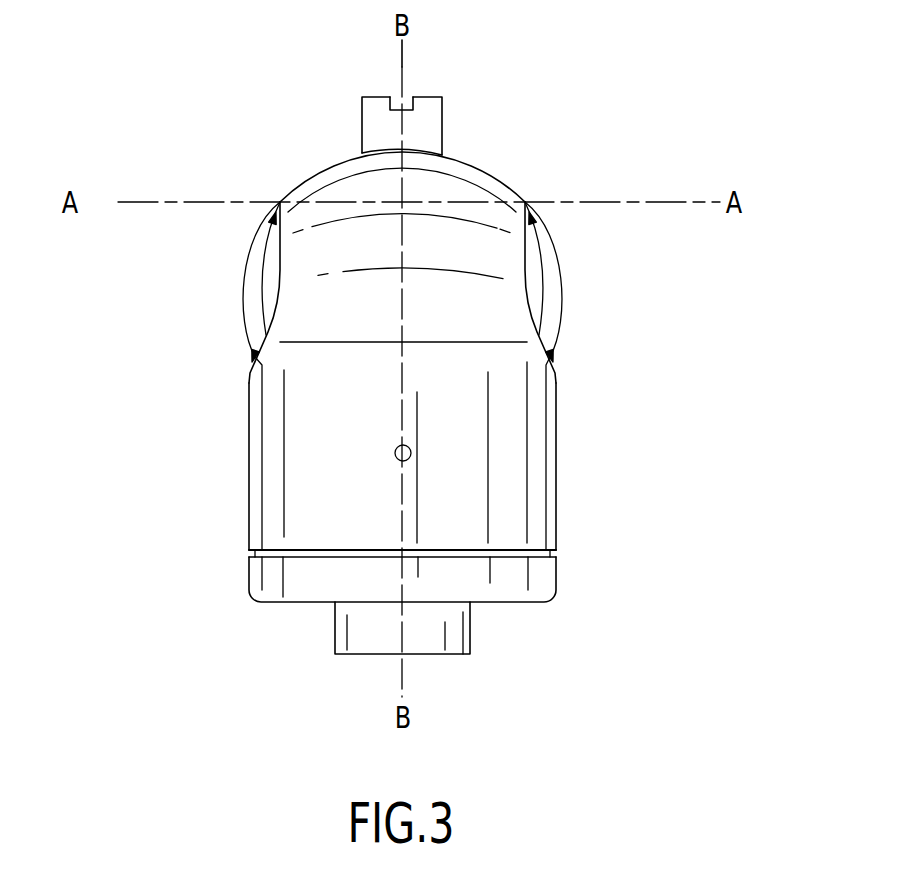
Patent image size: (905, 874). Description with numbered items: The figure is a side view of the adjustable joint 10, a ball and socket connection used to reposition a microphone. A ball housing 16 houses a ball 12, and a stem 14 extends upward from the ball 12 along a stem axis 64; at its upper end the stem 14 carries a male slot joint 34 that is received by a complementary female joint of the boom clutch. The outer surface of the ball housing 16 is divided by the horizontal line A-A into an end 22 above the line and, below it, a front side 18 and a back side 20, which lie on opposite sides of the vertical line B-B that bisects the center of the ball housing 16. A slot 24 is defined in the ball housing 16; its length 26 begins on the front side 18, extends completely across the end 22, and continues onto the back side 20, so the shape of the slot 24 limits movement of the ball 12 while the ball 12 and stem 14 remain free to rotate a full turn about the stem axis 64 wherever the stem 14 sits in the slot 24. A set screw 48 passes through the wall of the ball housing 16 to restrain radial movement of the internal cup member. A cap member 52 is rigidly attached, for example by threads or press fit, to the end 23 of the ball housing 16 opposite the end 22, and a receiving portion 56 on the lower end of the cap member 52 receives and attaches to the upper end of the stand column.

The adjustable joint 10 is at (636, 124).
The ball 12 is at (273, 260).
The stem 14 is at (437, 128).
The ball housing 16 is at (278, 353).
The front side 18 is at (242, 423).
The back side 20 is at (563, 423).
The end 22 is at (391, 141).
The end 23 is at (275, 568).
The slot 24 is at (557, 293).
The length 26 is at (248, 278).
The male slot joint 34 is at (428, 95).
The set screw 48 is at (412, 453).
The cap member 52 is at (528, 583).
The receiving portion 56 is at (428, 655).
The stem axis 64 is at (405, 68).